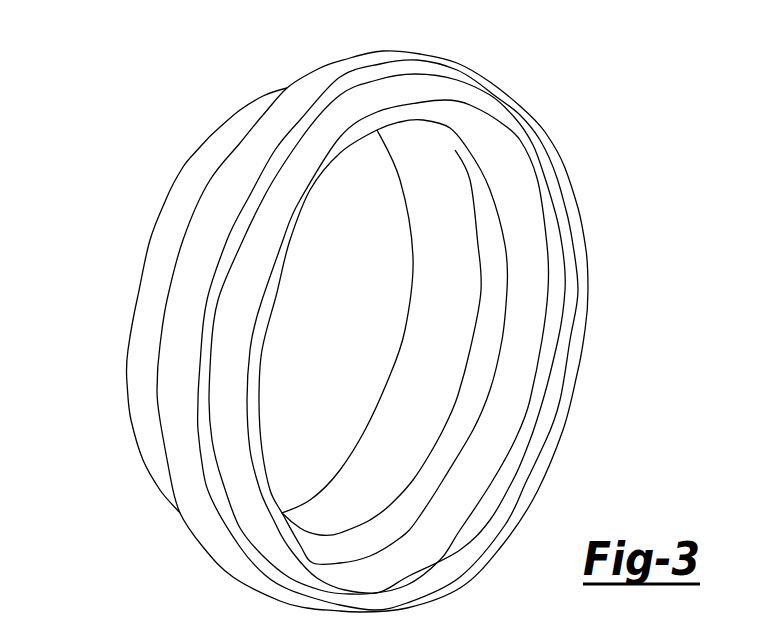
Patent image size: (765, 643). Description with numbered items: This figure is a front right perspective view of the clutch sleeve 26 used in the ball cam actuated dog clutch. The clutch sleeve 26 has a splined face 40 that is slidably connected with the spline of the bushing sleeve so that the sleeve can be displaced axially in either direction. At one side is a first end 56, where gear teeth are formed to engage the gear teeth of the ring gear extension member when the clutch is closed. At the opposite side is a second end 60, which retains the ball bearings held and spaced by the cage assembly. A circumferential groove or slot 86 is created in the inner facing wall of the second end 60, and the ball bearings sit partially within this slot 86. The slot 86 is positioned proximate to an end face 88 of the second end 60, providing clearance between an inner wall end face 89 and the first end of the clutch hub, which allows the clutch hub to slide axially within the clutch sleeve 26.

The clutch sleeve 26 is at (378, 315).
The splined face 40 is at (277, 117).
The first end 56 is at (155, 264).
The second end 60 is at (355, 112).
The circumferential groove or slot 86 is at (547, 357).
The end face 88 is at (578, 225).
The inner wall end face 89 is at (470, 151).